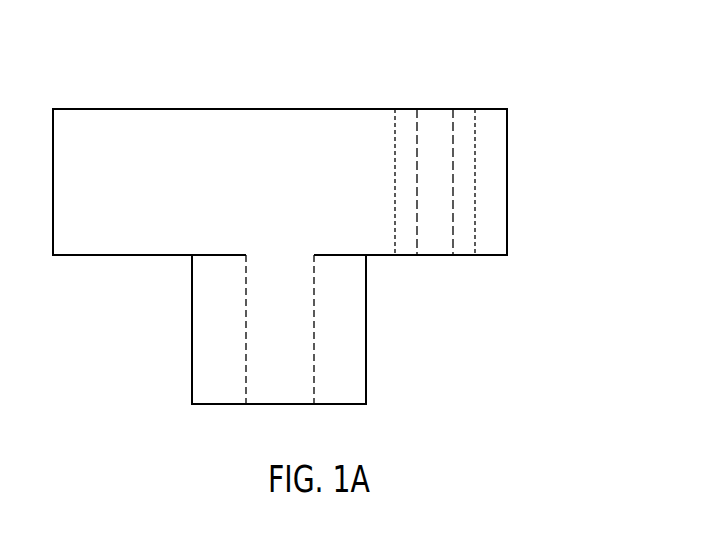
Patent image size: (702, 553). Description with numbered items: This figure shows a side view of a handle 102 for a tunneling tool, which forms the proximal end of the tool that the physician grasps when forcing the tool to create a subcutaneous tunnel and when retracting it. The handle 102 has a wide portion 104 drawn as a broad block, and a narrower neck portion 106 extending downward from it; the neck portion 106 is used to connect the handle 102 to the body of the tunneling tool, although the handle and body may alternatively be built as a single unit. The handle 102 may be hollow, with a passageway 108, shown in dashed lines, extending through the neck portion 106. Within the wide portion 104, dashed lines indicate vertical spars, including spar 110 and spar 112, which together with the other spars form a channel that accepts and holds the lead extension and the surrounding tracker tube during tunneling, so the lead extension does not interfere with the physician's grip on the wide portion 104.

The handle 102 is at (319, 208).
The wide portion 104 is at (507, 171).
The neck portion 106 is at (366, 321).
The passageway 108 is at (291, 344).
The vertical spar 110 is at (395, 128).
The vertical spar 112 is at (475, 128).